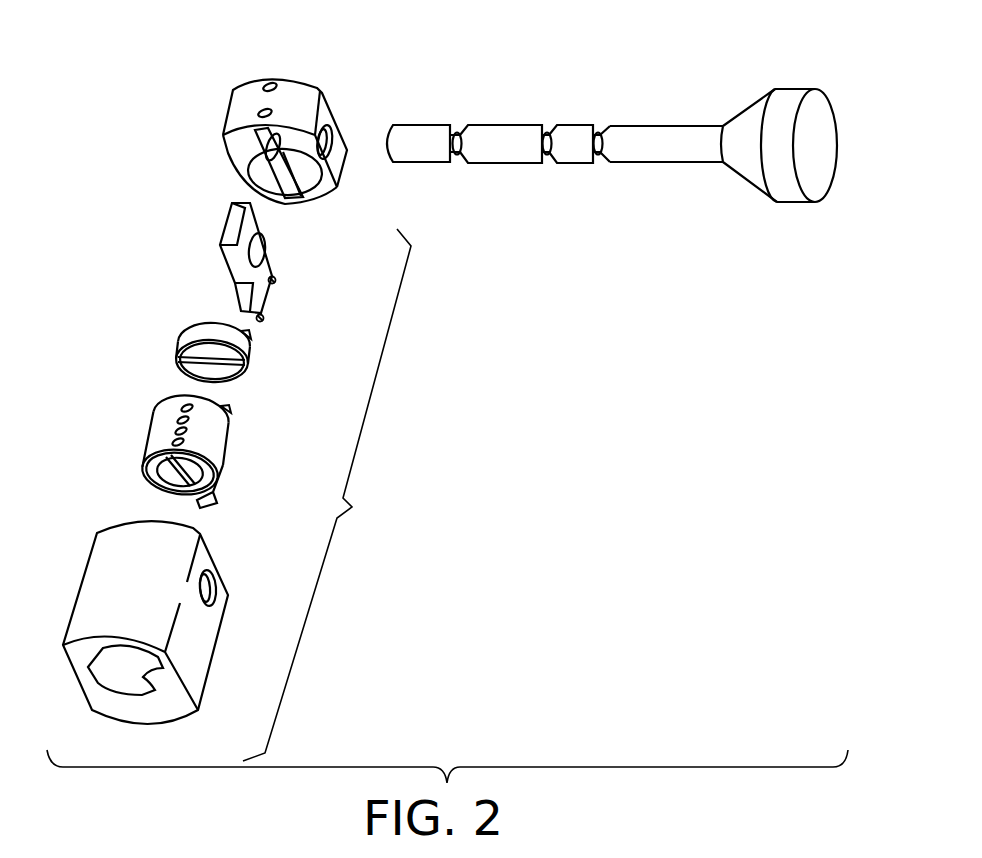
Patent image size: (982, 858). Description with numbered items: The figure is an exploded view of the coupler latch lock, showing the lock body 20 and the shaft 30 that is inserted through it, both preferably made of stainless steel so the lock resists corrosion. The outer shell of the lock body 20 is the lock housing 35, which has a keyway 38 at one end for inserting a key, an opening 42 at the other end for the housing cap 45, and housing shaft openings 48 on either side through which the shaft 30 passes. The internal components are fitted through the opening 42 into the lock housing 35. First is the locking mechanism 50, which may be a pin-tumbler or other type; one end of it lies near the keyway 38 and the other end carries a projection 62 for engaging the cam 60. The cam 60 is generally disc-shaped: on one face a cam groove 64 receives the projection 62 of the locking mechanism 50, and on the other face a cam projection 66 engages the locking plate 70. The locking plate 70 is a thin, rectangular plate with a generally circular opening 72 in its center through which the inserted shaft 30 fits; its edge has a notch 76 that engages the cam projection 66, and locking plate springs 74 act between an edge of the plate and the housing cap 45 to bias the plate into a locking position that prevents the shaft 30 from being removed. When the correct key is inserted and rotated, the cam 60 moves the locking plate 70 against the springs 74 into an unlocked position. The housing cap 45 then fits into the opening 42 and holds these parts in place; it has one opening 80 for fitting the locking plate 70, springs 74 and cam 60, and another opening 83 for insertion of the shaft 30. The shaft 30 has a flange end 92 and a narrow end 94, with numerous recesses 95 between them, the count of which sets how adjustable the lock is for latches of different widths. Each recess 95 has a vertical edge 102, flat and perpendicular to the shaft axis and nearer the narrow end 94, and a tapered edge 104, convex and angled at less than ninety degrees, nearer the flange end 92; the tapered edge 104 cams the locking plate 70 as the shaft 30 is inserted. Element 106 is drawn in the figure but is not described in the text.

The lock body 20 is at (327, 495).
The shaft 30 is at (647, 148).
The lock housing 35 is at (200, 627).
The keyway 38 is at (118, 670).
The opening for housing cap 42 is at (152, 513).
The housing cap 45 is at (242, 87).
The housing shaft openings 48 is at (210, 585).
The locking mechanism 50 is at (208, 440).
The cam 60 is at (187, 332).
The projection 62 is at (230, 412).
The cam groove 64 is at (225, 368).
The cam projection 66 is at (250, 337).
The locking plate 70 is at (232, 225).
The circular opening 72 is at (257, 253).
The locking plate springs 74 is at (275, 278).
The notch 76 is at (242, 295).
The opening 80 is at (260, 173).
The opening 83 is at (332, 152).
The flange end 92 is at (813, 177).
The narrow end 94 is at (384, 132).
The recesses 95 is at (458, 156).
The vertical edge 102 is at (598, 131).
The tapered edge 104 is at (606, 133).
The neck 106 is at (457, 131).